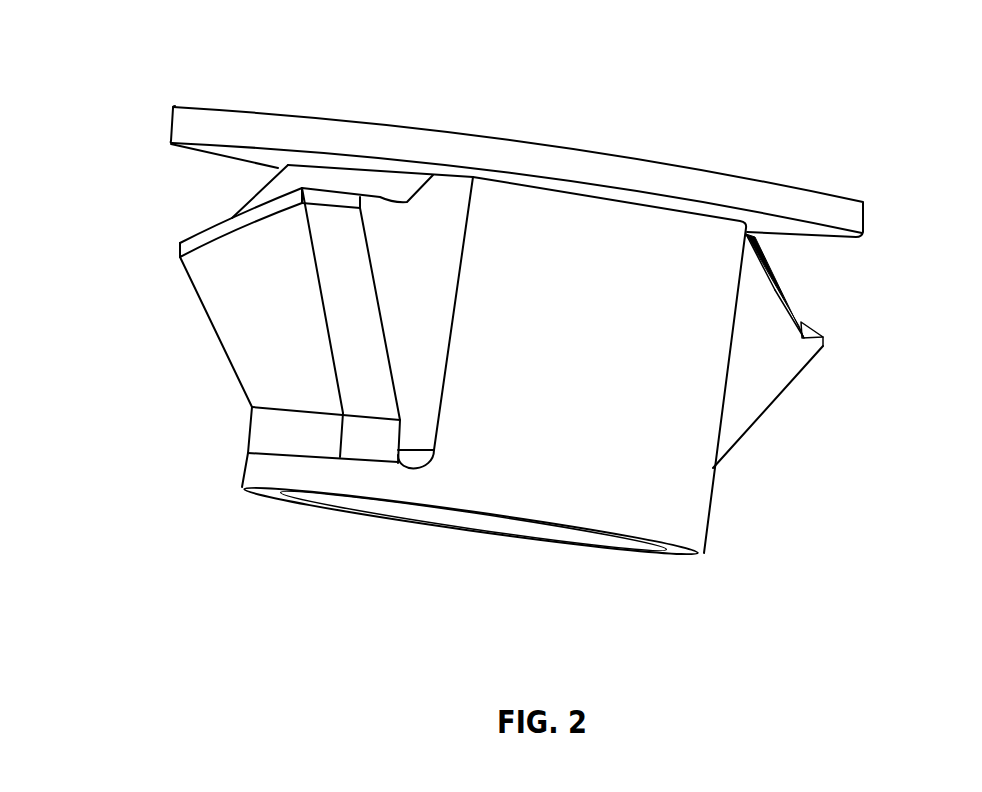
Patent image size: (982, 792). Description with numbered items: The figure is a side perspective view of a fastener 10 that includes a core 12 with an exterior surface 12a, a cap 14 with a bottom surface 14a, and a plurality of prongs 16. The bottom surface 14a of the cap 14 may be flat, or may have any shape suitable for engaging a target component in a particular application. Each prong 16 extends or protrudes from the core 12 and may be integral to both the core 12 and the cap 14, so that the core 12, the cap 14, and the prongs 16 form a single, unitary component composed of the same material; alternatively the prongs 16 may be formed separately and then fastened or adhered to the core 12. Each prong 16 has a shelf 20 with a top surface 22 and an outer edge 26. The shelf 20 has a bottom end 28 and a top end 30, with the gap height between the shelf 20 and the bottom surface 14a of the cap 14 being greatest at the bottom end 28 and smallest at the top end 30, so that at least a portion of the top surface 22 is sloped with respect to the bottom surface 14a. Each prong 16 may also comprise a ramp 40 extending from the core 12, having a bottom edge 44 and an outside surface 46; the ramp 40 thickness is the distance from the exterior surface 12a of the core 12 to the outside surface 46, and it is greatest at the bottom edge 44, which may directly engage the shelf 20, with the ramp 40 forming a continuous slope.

The fastener 10 is at (136, 42).
The core 12 is at (527, 482).
The exterior surface 12a is at (240, 466).
The cap 14 is at (188, 124).
The bottom surface 14a is at (218, 147).
The prong 16 is at (400, 305).
The shelf 20 is at (823, 352).
The top surface 22 is at (806, 323).
The outer edge 26 is at (225, 229).
The bottom end 28 is at (824, 341).
The top end 30 is at (380, 197).
The ramp 40 is at (758, 353).
The bottom edge 44 is at (804, 322).
The outside surface 46 is at (783, 294).